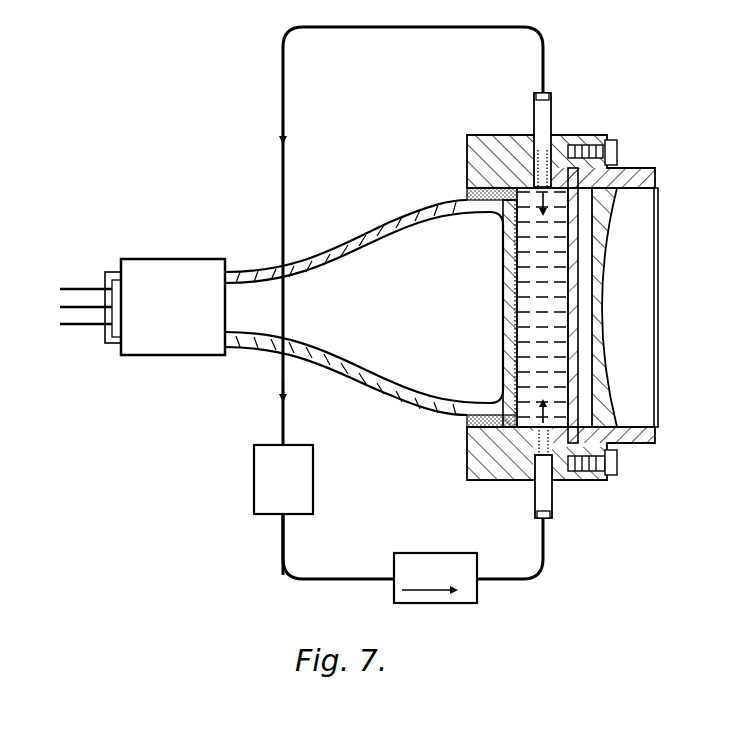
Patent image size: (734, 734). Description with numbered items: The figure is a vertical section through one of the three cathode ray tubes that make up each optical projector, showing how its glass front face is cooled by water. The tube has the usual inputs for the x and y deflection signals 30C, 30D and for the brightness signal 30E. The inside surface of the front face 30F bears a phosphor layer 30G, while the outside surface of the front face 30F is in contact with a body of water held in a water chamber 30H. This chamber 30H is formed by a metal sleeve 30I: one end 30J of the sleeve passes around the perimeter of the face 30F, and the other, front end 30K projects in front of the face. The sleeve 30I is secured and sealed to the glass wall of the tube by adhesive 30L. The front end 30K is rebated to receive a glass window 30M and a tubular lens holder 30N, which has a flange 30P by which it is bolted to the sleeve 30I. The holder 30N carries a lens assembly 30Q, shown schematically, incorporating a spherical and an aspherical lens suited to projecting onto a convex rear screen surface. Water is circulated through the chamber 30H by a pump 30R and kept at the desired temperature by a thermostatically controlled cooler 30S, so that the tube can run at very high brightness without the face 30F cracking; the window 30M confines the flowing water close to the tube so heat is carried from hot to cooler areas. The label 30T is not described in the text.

The x deflection signal input 30C is at (90, 326).
The y deflection signal input 30D is at (88, 297).
The brightness signal input 30E is at (82, 289).
The front face 30F is at (514, 352).
The phosphor layer 30G is at (510, 306).
The water chamber 30H is at (530, 262).
The metal sleeve 30I is at (503, 137).
The sleeve end 30J is at (467, 463).
The front end of sleeve 30K is at (559, 136).
The adhesive 30L is at (467, 195).
The glass window 30M is at (573, 340).
The tubular lens holder 30N is at (658, 186).
The flange 30P is at (599, 135).
The lens assembly 30Q is at (601, 258).
The pump 30R is at (592, 437).
The thermostatically controlled cooler 30S is at (313, 497).
The block body 30T is at (467, 162).